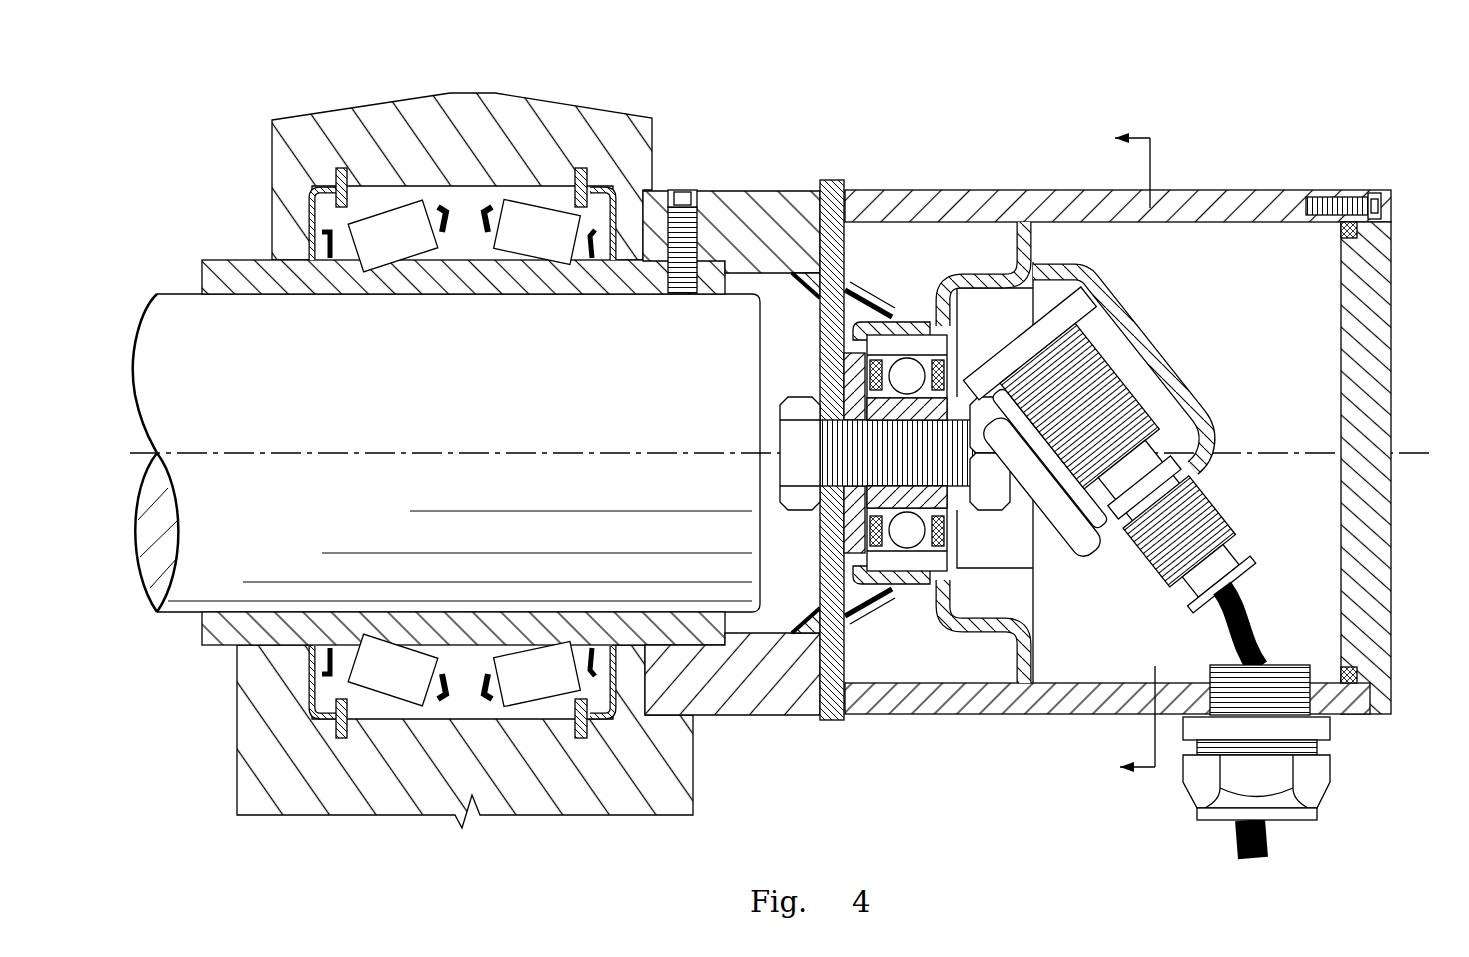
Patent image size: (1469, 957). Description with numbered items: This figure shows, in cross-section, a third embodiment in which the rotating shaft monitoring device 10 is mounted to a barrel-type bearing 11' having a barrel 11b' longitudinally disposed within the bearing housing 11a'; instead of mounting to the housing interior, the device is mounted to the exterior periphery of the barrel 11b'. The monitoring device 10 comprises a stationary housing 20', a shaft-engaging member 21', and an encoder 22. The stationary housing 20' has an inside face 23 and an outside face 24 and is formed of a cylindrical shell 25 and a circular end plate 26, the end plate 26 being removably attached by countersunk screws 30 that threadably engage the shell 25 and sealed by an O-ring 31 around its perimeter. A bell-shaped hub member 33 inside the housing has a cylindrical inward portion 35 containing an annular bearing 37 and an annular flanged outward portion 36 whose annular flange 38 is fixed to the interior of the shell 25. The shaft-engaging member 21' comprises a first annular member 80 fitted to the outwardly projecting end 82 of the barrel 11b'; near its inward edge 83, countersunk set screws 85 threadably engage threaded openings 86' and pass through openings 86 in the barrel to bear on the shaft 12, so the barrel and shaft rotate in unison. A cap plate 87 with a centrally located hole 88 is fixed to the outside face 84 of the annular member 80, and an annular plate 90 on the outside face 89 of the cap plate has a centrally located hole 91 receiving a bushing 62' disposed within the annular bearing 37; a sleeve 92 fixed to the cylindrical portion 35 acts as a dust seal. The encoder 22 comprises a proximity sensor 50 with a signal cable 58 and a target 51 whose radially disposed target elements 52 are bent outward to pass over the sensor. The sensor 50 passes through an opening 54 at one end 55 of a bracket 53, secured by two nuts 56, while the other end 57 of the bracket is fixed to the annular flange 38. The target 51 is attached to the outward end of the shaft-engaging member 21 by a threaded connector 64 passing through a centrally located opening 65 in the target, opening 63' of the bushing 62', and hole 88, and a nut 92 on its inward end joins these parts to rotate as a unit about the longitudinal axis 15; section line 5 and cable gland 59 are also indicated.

The rotating shaft monitoring device 10 is at (1157, 460).
The bearing 11' is at (455, 439).
The bearing housing 11a' is at (465, 446).
The barrel 11b' is at (440, 428).
The shaft 12 is at (152, 300).
The longitudinal axis 15 is at (312, 445).
The stationary housing 20' is at (1157, 417).
The shaft-engaging member 21 is at (822, 483).
The shaft-engaging member 21' is at (702, 413).
The encoder 22 is at (1179, 531).
The inside face 23 is at (813, 583).
The outside face 24 is at (1394, 380).
The cylindrical shell 25 is at (1065, 195).
The circular end plate 26 is at (1392, 298).
The countersunk screws 30 is at (1386, 208).
The O-ring 31 is at (1342, 230).
The bell-shaped hub member 33 is at (983, 330).
The cylindrical inward portion 35 is at (912, 320).
The annular flanged outward portion 36 is at (1020, 218).
The annular bearing 37 is at (920, 560).
The annular flange 38 is at (1017, 246).
The proximity sensor 50 is at (1139, 543).
The target 51 is at (1090, 302).
The target elements 52 is at (1071, 396).
The bracket 53 is at (1170, 337).
The opening 54 is at (1144, 487).
The one end 55 is at (1140, 482).
The nuts 56 is at (1213, 574).
The other end 57 is at (1036, 262).
The signal cable 58 is at (1258, 615).
The cable gland 59 is at (1208, 650).
The bushing 62' is at (819, 519).
The opening 63' is at (783, 428).
The threaded connector 64 is at (988, 395).
The centrally located opening 65 is at (990, 512).
The first annular member 80 is at (746, 190).
The outwardly projecting end 82 is at (728, 280).
The inward edge 83 is at (633, 262).
The outside face 84 is at (825, 440).
The countersunk set screws 85 is at (683, 192).
The openings 86 is at (682, 313).
The threaded openings 86' is at (639, 333).
The cap plate 87 is at (838, 248).
The centrally located hole 88 is at (832, 376).
The outside face 89 is at (836, 568).
The annular plate 90 is at (834, 350).
The centrally located hole 91 is at (832, 500).
The sleeve 92 is at (795, 440).
The section line 5- 5 is at (1135, 456).